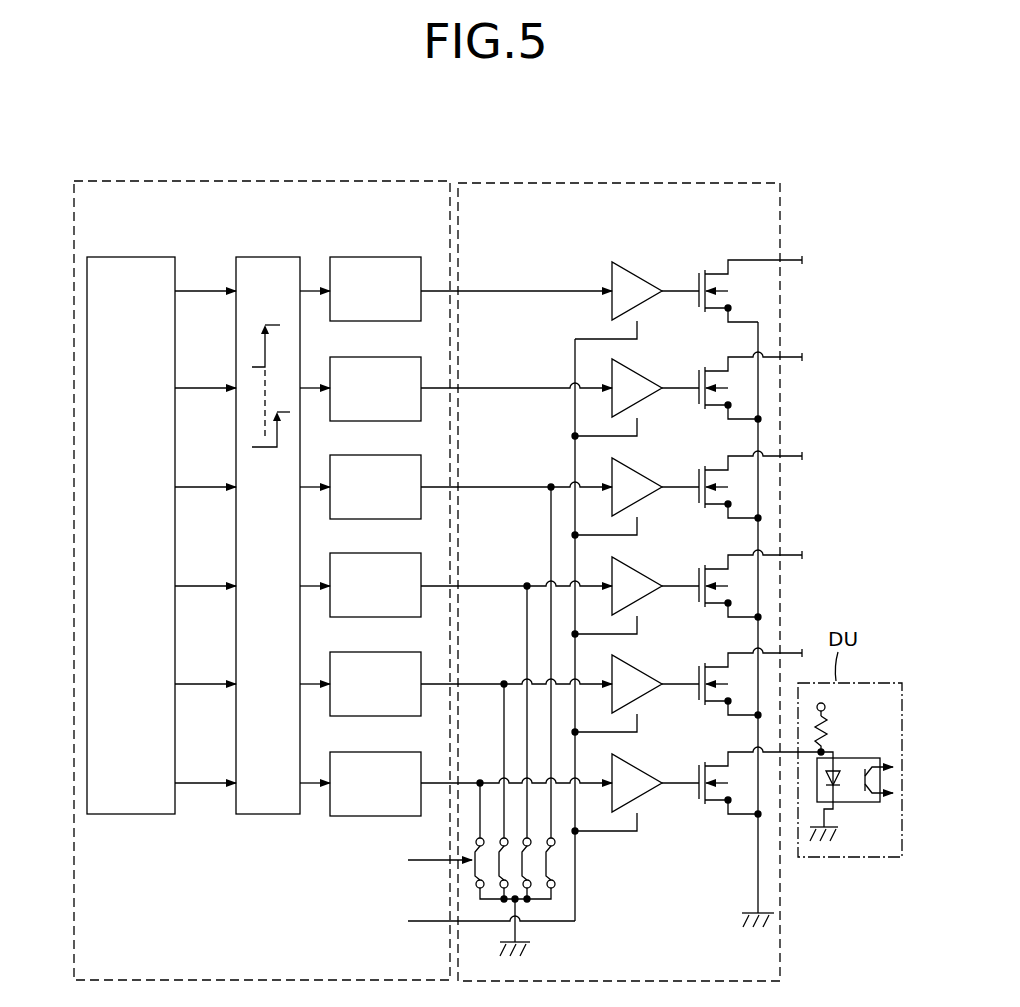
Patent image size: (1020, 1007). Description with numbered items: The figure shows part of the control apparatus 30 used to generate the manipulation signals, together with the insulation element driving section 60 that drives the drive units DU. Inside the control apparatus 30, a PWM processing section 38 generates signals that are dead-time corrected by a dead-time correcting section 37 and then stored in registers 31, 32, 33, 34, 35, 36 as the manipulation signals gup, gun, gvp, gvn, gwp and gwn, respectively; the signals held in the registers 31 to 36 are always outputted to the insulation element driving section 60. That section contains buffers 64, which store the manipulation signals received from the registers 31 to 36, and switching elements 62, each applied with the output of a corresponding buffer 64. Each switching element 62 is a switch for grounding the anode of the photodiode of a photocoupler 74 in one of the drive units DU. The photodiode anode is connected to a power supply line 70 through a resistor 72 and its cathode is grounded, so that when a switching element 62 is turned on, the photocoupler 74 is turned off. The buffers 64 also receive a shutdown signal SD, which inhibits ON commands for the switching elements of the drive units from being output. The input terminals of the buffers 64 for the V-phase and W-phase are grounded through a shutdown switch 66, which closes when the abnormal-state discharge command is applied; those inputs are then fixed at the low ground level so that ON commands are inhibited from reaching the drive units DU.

The control apparatus 30 is at (262, 181).
The insulation element driving section 60 is at (625, 183).
The PWM processing section 38 is at (131, 257).
The dead-time correcting section 37 is at (270, 257).
The register 31 is at (392, 257).
The register 32 is at (392, 357).
The register 33 is at (392, 455).
The register 34 is at (392, 553).
The register 35 is at (392, 652).
The register 36 is at (392, 752).
The buffer 64 is at (641, 278).
The switching element 62 is at (716, 272).
The shutdown switch 66 is at (587, 876).
The power supply line 70 is at (825, 707).
The resistor 72 is at (830, 727).
The photocoupler 74 is at (866, 803).